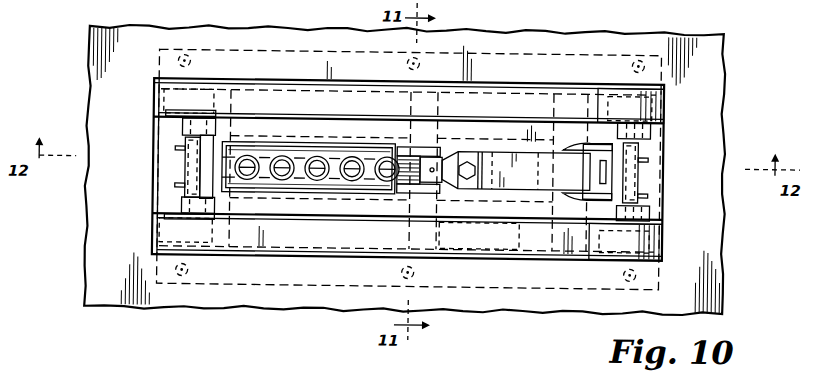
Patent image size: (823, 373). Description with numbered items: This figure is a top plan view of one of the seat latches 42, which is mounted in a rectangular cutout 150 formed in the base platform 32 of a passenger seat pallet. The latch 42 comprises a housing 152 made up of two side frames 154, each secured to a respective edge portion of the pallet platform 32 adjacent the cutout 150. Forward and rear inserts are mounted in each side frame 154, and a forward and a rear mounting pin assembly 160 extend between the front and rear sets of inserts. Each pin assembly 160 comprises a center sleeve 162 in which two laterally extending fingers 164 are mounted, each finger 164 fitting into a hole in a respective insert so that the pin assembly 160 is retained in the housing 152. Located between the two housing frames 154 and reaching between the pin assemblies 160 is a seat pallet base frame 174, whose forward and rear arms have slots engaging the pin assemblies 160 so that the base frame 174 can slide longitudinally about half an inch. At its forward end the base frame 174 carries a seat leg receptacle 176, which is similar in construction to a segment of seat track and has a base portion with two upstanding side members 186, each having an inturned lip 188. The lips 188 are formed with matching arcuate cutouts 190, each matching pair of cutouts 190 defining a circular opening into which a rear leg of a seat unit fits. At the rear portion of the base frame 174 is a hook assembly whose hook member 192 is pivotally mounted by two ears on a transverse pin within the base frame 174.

The base platform 32 is at (99, 300).
The seat latch 42 is at (684, 130).
The rectangular cutout 150 is at (150, 176).
The housing 152 is at (262, 266).
The side frame 154 is at (331, 246).
The mounting pin assembly 160 is at (172, 169).
The center sleeve 162 is at (183, 168).
The finger 164 is at (183, 128).
The seat pallet base frame 174 is at (366, 207).
The seat leg receptacle 176 is at (299, 159).
The upstanding side member 186 is at (270, 368).
The inturned lip 188 is at (261, 156).
The arcuate cutout 190 is at (283, 182).
The hook member 192 is at (420, 152).